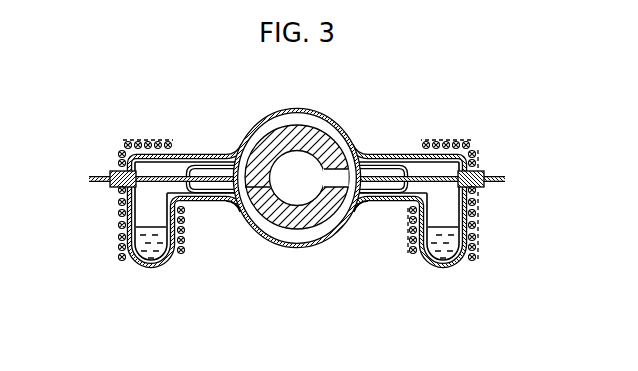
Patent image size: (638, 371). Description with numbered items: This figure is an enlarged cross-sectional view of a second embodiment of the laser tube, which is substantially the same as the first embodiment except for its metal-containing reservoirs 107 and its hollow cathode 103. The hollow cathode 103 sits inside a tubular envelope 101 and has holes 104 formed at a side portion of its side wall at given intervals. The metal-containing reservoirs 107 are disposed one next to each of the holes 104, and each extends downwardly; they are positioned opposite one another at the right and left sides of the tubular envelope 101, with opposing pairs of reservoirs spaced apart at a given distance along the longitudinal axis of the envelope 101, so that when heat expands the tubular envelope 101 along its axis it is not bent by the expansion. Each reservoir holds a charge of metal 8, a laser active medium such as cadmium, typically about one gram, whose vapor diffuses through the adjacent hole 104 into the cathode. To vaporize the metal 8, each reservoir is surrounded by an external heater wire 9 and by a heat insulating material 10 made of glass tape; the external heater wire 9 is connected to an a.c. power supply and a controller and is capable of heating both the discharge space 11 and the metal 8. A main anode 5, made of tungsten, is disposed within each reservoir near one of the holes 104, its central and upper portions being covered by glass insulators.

The main anode 5 is at (89, 176).
The metal 8 is at (153, 244).
The external heater wire 9 is at (117, 259).
The heat insulating material 10 is at (162, 141).
The discharge space 11 is at (228, 204).
The tubular envelope 101 is at (300, 109).
The hollow cathode 103 is at (301, 218).
The holes 104 is at (262, 170).
The metal-containing reservoir 107 is at (167, 267).